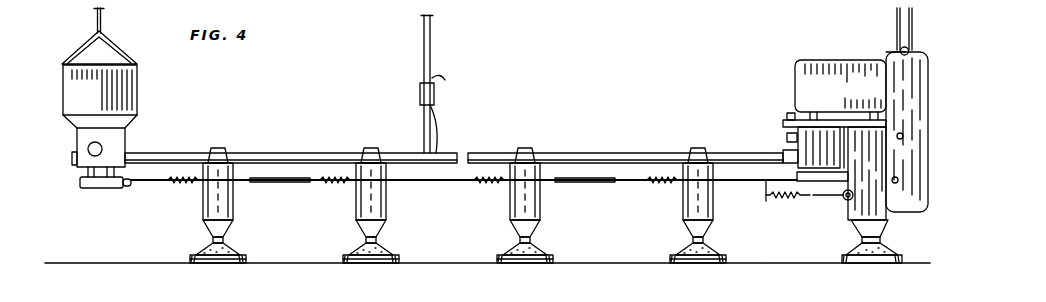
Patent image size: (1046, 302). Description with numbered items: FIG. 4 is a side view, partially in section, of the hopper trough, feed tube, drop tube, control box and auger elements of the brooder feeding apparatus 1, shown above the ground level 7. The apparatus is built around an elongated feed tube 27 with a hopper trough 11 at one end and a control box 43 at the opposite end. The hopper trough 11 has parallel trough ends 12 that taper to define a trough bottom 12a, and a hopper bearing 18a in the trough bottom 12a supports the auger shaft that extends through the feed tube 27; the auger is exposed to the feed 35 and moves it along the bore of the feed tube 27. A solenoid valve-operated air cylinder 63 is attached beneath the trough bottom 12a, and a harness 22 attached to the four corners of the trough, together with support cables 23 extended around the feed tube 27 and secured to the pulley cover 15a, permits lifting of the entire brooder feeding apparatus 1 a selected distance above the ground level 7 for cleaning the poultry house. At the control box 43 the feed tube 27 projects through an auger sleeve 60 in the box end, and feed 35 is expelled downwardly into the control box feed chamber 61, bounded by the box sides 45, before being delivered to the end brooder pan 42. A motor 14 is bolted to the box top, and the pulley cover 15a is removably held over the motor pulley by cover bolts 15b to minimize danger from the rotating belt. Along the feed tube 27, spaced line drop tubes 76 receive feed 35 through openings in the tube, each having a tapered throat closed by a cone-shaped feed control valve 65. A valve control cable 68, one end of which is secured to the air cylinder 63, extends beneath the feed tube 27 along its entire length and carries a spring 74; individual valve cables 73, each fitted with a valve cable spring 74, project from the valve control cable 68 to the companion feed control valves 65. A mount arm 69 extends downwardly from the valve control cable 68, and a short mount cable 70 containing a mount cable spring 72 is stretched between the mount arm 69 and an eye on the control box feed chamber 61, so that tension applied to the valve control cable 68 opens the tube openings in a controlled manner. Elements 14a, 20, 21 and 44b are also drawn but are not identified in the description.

The brooder feeding apparatus 1 is at (379, 117).
The ground level 7 is at (70, 255).
The hopper trough 11 is at (477, 113).
The trough ends 12 is at (138, 95).
The trough bottom 12a is at (130, 125).
The motor 14 is at (797, 82).
The ventilation slots 14a is at (868, 110).
The pulley cover 15a is at (893, 50).
The cover bolts 15b is at (902, 165).
The hopper bearing 18a is at (72, 160).
The vented panel 20 is at (62, 130).
The knob 21 is at (102, 146).
The harness 22 is at (120, 52).
The support cables 23 is at (102, 22).
The feed tube 27 is at (283, 152).
The feed 35 is at (242, 256).
The brooder pans 42 is at (190, 260).
The control box 43 is at (827, 147).
The mounting bracket 44b is at (791, 114).
The box sides 45 is at (841, 173).
The auger sleeve 60 is at (798, 160).
The control box feed chamber 61 is at (852, 231).
The solenoid valve-operated air cylinder 63 is at (108, 188).
The cone-shaped feed control valve 65 is at (224, 240).
The valve control cable 68 is at (280, 182).
The mount arm 69 is at (765, 195).
The mount cable 70 is at (830, 198).
The mount cable spring 72 is at (784, 197).
The valve cables 73 is at (190, 183).
The valve cable spring 74 is at (322, 179).
The line drop tubes 76 is at (212, 183).